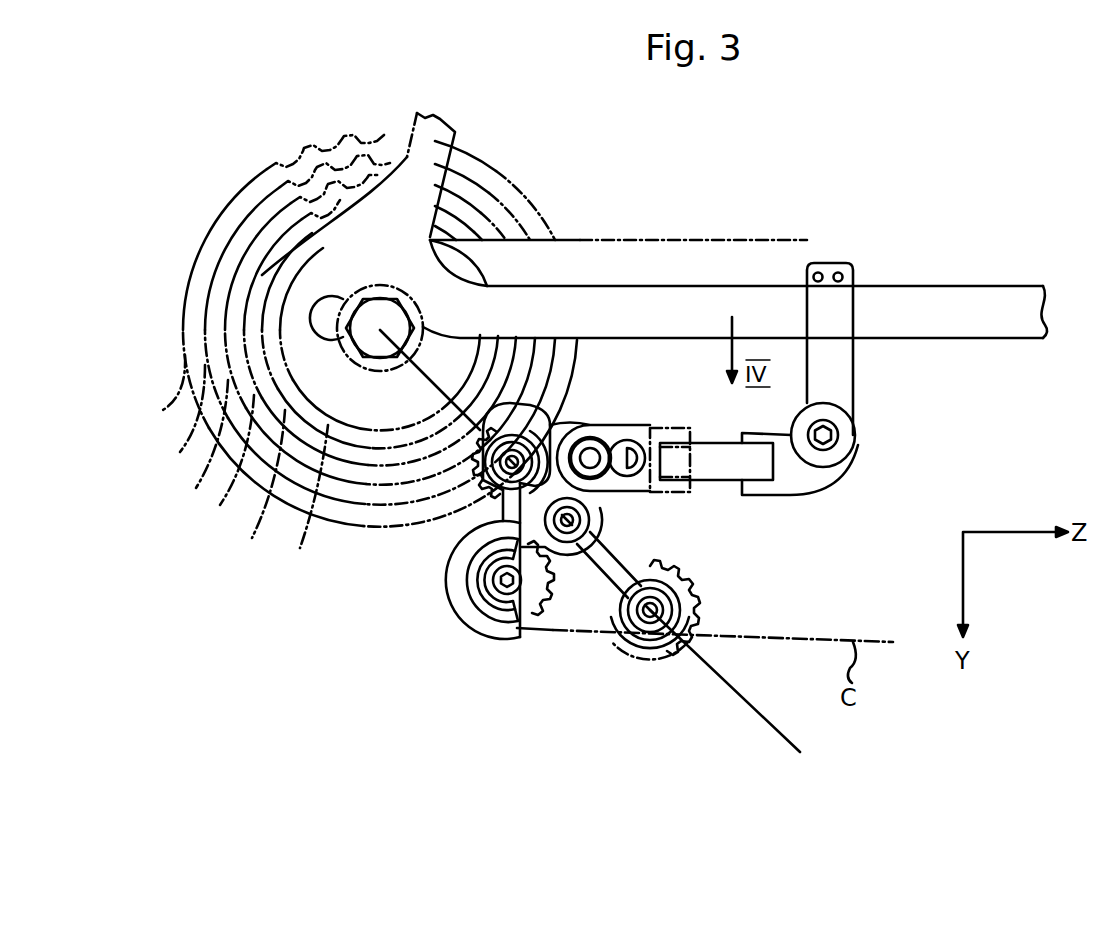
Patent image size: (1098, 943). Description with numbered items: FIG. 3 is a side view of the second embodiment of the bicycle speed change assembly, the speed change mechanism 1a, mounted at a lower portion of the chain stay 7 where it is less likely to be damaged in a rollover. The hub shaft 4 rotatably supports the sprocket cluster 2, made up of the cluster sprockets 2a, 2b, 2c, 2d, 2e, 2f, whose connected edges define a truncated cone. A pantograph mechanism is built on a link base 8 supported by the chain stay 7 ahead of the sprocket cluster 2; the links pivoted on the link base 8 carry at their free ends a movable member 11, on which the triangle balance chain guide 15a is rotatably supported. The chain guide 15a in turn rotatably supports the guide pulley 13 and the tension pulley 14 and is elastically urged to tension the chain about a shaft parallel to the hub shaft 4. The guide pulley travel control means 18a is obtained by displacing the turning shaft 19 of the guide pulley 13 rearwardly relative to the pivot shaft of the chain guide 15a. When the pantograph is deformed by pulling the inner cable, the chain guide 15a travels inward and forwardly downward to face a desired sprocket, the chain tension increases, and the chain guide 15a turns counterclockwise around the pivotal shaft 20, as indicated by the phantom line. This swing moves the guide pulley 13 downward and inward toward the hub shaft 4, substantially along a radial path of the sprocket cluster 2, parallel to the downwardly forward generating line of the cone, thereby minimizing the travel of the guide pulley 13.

The speed change mechanism 1a is at (652, 715).
The sprocket cluster 2 is at (341, 355).
The cluster sprocket 2a is at (300, 548).
The cluster sprocket 2b is at (252, 538).
The cluster sprocket 2c is at (220, 505).
The cluster sprocket 2d is at (196, 488).
The cluster sprocket 2e is at (180, 452).
The cluster sprocket 2f is at (163, 410).
The hub shaft 4 is at (417, 307).
The chain stay 7 is at (958, 286).
The link base 8 is at (860, 447).
The movable member 11 is at (610, 428).
The guide pulley 13 is at (476, 432).
The tension pulley 14 is at (538, 620).
The chain guide 15a is at (460, 619).
The guide pulley travel control means 18a is at (498, 663).
The turning shaft 19 is at (453, 555).
The pivotal shaft 20 is at (592, 437).